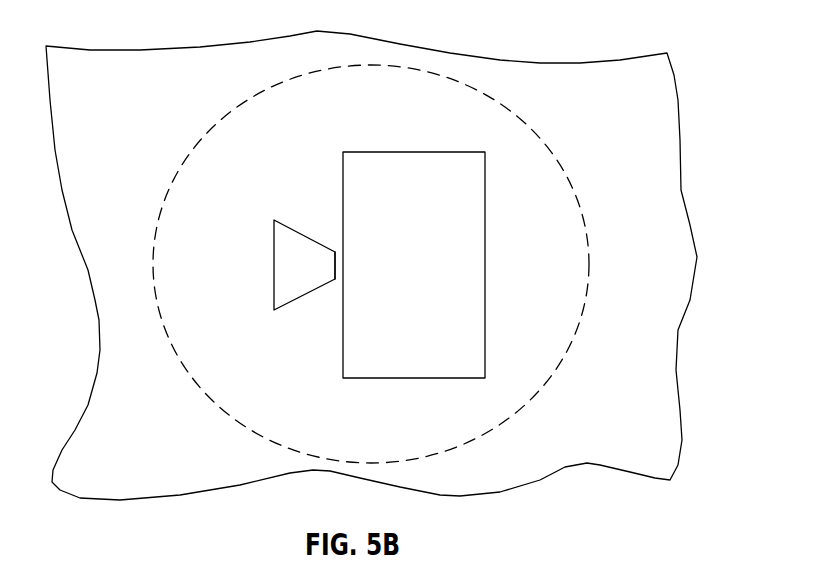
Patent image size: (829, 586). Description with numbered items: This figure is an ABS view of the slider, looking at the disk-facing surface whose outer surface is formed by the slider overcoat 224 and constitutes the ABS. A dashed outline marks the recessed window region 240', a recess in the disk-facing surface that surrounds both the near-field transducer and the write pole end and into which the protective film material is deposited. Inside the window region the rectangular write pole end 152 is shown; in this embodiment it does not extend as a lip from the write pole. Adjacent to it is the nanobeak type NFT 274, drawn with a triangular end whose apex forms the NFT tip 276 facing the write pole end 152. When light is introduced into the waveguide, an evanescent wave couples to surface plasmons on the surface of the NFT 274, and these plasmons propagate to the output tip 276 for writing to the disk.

The slider overcoat 224 is at (655, 104).
The air bearing surface ABS is at (665, 191).
The recessed window region 240' is at (371, 264).
The write pole end 152 is at (432, 163).
The nanobeak type NFT 274 is at (280, 255).
The NFT tip 276 is at (337, 265).